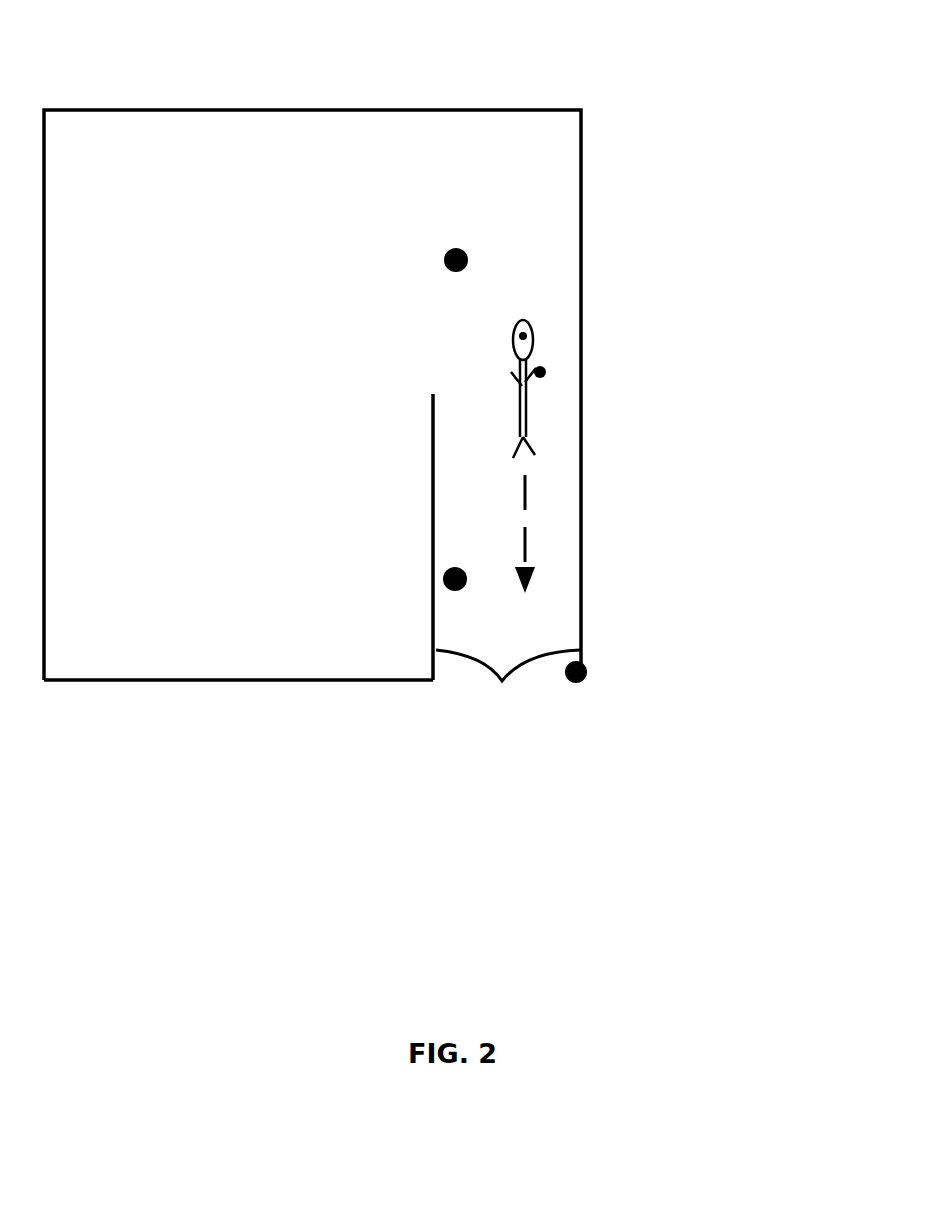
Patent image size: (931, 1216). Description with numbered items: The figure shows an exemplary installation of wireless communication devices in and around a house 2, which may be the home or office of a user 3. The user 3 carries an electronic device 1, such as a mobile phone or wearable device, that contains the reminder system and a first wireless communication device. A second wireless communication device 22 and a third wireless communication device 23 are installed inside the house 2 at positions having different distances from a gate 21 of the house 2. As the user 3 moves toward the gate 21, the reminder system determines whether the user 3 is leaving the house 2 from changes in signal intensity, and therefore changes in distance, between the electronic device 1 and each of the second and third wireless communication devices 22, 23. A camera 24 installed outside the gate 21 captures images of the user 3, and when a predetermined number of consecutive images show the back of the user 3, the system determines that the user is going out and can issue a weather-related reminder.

The electronic device 1 is at (540, 372).
The house 2 is at (272, 168).
The user 3 is at (526, 332).
The gate 21 is at (523, 660).
The second wireless communication device 22 is at (460, 249).
The third wireless communication device 23 is at (445, 582).
The camera 24 is at (580, 661).